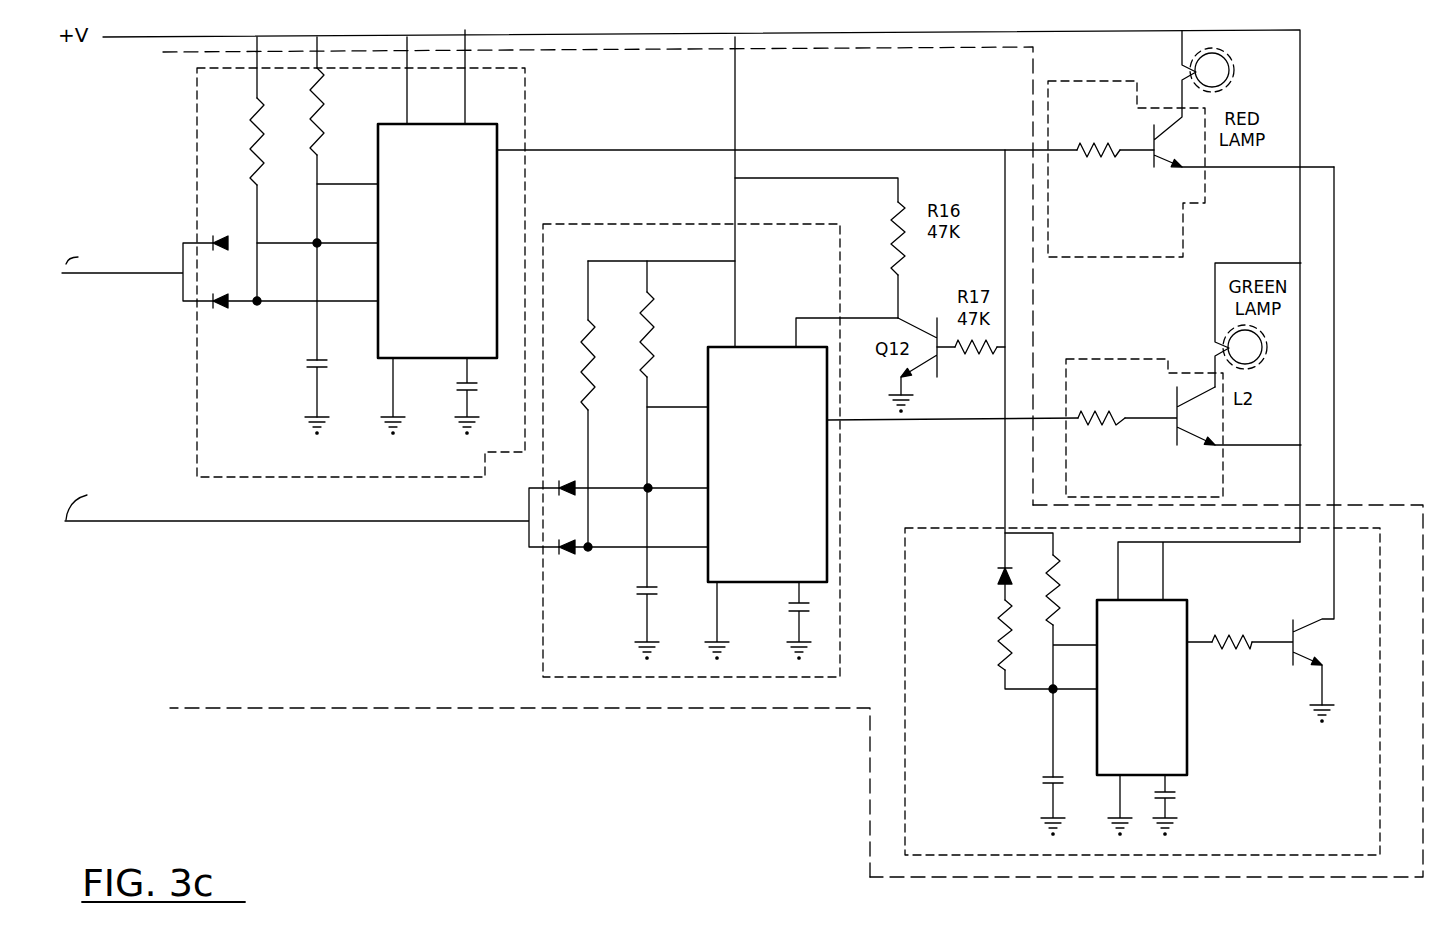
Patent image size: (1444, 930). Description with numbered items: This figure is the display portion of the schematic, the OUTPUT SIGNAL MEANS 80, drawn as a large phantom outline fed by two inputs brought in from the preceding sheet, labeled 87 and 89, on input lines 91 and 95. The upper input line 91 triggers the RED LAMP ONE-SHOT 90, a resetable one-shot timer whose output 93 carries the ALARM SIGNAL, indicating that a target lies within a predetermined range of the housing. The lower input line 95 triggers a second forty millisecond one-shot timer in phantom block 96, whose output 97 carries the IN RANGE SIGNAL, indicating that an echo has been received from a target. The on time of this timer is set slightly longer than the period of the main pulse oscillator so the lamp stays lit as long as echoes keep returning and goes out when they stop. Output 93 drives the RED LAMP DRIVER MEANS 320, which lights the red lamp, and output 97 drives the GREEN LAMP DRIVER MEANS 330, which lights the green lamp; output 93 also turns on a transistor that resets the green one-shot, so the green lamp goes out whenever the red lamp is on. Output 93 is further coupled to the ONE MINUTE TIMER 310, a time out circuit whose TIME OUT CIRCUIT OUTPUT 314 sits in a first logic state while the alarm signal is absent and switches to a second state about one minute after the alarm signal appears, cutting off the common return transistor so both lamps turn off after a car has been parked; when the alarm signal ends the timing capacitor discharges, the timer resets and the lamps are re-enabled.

The output signal means 80 is at (323, 691).
The red lamp one-shot 90 is at (254, 464).
The input from FIG. 3a (87) 91 is at (160, 280).
The red lamp one-shot output 93 is at (531, 151).
The input from FIG. 3a (89) 95 is at (165, 523).
The 40 ms timer 96 is at (594, 669).
The green lamp one-shot output 97 is at (840, 420).
The one minute timer 310 is at (1142, 511).
The time out circuit output 314 is at (1347, 505).
The red lamp driver means 320 is at (1088, 179).
The green lamp driver means 330 is at (1214, 480).
The input from FIG. 3a 87 is at (102, 233).
The input from FIG. 3a 89 is at (102, 477).